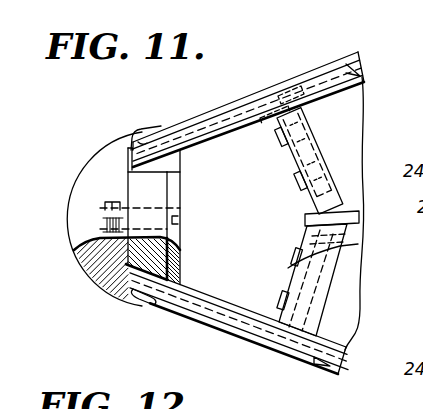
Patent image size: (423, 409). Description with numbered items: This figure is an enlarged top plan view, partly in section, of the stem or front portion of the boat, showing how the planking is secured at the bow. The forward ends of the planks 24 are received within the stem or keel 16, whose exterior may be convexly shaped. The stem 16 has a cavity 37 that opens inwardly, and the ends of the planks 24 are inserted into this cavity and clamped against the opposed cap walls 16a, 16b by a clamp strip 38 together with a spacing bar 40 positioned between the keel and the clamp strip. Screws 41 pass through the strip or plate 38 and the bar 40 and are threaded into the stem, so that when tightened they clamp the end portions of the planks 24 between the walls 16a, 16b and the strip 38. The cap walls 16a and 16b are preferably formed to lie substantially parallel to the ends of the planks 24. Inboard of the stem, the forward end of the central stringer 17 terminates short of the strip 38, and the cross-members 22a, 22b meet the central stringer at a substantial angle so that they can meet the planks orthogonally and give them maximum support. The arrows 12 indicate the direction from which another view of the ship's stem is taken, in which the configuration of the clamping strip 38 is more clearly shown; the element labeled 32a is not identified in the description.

The arrows 12—12 (view direction) 12 is at (272, 155).
The stem or keel 16 is at (72, 191).
The cap wall 16a is at (146, 134).
The cap wall 16b is at (142, 299).
The central stringer 17 is at (359, 218).
The cross-member 22a is at (322, 182).
The cross-member 22b is at (326, 277).
The planks 24 is at (215, 108).
The rail end 32a is at (363, 78).
The cavity 37 is at (128, 160).
The clamp strip 38 is at (181, 180).
The spacing bar 40 is at (133, 199).
The screws 41 is at (181, 210).